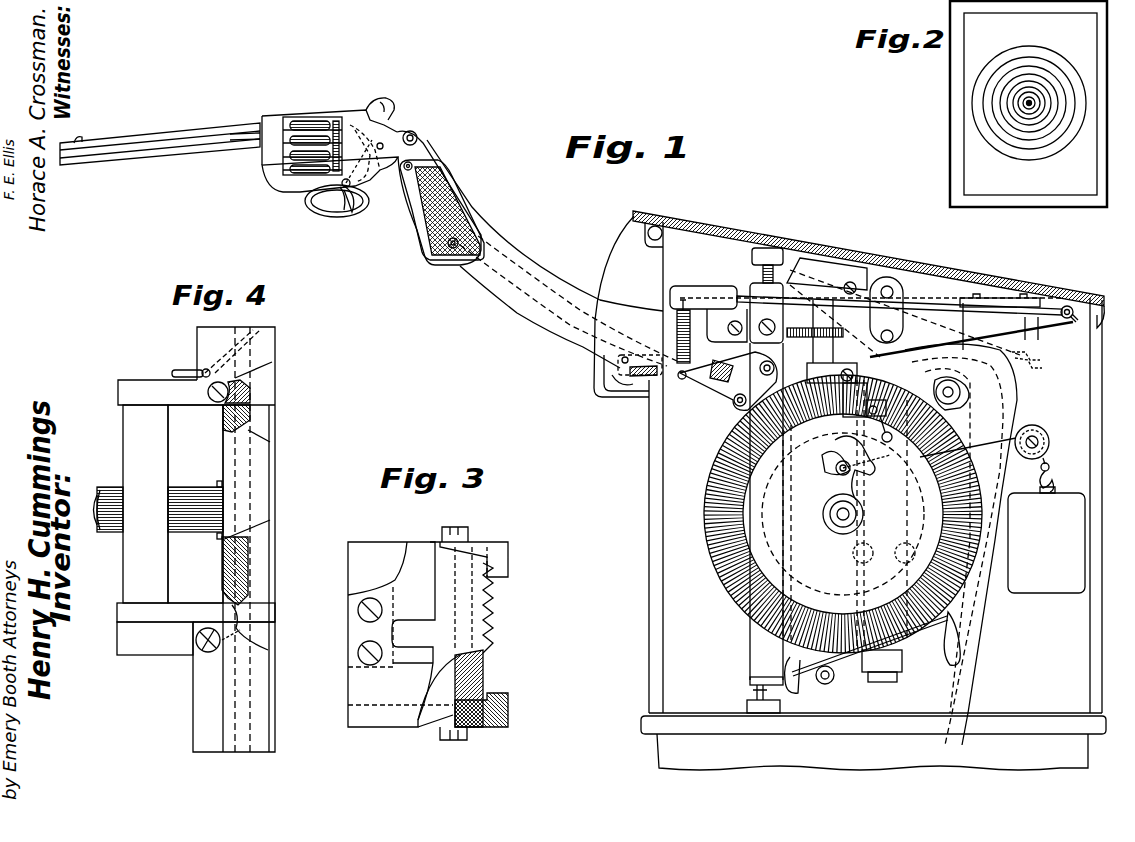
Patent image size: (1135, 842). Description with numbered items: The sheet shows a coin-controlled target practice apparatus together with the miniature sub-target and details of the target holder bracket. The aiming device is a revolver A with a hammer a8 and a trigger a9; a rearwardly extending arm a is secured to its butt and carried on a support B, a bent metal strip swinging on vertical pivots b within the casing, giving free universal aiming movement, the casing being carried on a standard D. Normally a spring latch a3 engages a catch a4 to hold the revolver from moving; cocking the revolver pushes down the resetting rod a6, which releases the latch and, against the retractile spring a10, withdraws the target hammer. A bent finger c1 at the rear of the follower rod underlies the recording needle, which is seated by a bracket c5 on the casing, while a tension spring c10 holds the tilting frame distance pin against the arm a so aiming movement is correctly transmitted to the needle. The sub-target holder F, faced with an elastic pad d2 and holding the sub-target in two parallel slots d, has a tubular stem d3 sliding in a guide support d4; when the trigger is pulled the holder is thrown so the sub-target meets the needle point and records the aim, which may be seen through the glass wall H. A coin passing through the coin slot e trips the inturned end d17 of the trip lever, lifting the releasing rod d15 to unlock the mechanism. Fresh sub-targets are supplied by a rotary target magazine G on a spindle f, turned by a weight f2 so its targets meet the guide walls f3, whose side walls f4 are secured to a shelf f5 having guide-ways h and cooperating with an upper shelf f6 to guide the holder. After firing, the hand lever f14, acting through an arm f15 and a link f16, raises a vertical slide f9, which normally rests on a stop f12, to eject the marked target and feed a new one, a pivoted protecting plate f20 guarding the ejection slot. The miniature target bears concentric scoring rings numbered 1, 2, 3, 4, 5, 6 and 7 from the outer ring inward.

In FIG. 1, the revolver A is at (212, 134).
In FIG. 1, the revolver hammer a8 is at (415, 132).
In FIG. 1, the trigger a9 is at (348, 203).
In FIG. 1, the arm a is at (541, 278).
In FIG. 1, the spring latch a3 is at (620, 376).
In FIG. 1, the catch a4 is at (634, 388).
In FIG. 1, the resetting rod a6 is at (700, 385).
In FIG. 1, the retractile spring a10 is at (722, 384).
In FIG. 1, the tension spring c10 is at (677, 330).
In FIG. 1, the guide support d4 is at (818, 352).
In FIG. 4, the guide support d4 is at (145, 504).
In FIG. 1, the glass wall H is at (955, 273).
In FIG. 1, the bracket c5 is at (968, 298).
In FIG. 1, the bent finger c1 is at (1071, 325).
In FIG. 1, the link f16 is at (890, 402).
In FIG. 1, the arm f15 is at (930, 395).
In FIG. 1, the hand lever f14 is at (1030, 362).
In FIG. 1, the spindle f is at (835, 520).
In FIG. 1, the target magazine G is at (843, 514).
In FIG. 1, the weight f2 is at (1002, 509).
In FIG. 1, the coin slot e is at (965, 617).
In FIG. 1, the inturned end d17 is at (955, 638).
In FIG. 1, the support B is at (766, 484).
In FIG. 1, the vertical pivot b is at (750, 692).
In FIG. 1, the releasing rod d15 is at (810, 690).
In FIG. 1, the vertical slide f9 is at (858, 660).
In FIG. 1, the stop f12 is at (888, 682).
In FIG. 1, the standard D is at (1060, 750).
In FIG. 2, the target ring 1 is at (1028, 168).
In FIG. 2, the target ring 2 is at (1028, 154).
In FIG. 2, the target ring 3 is at (1028, 143).
In FIG. 2, the target ring 4 is at (1028, 133).
In FIG. 2, the target ring 5 is at (1028, 125).
In FIG. 2, the target ring 6 is at (1028, 118).
In FIG. 2, the target ring 7 is at (1028, 112).
In FIG. 4, the upper shelf f6 is at (135, 386).
In FIG. 4, the protecting plate f20 is at (183, 369).
In FIG. 3, the protecting plate f20 is at (425, 640).
In FIG. 4, the sub-target holder F is at (223, 450).
In FIG. 3, the sub-target holder F is at (488, 670).
In FIG. 4, the tubular stem d3 is at (192, 532).
In FIG. 3, the tubular stem d3 is at (400, 634).
In FIG. 4, the elastic pad d2 is at (252, 570).
In FIG. 3, the elastic pad d2 is at (490, 650).
In FIG. 4, the guide-way h is at (135, 620).
In FIG. 4, the shelf f5 is at (170, 648).
In FIG. 4, the side wall f4 is at (234, 652).
In FIG. 4, the guide wall f3 is at (263, 686).
In FIG. 3, the guide wall f3 is at (508, 562).
In FIG. 3, the target receiving slot d is at (500, 710).